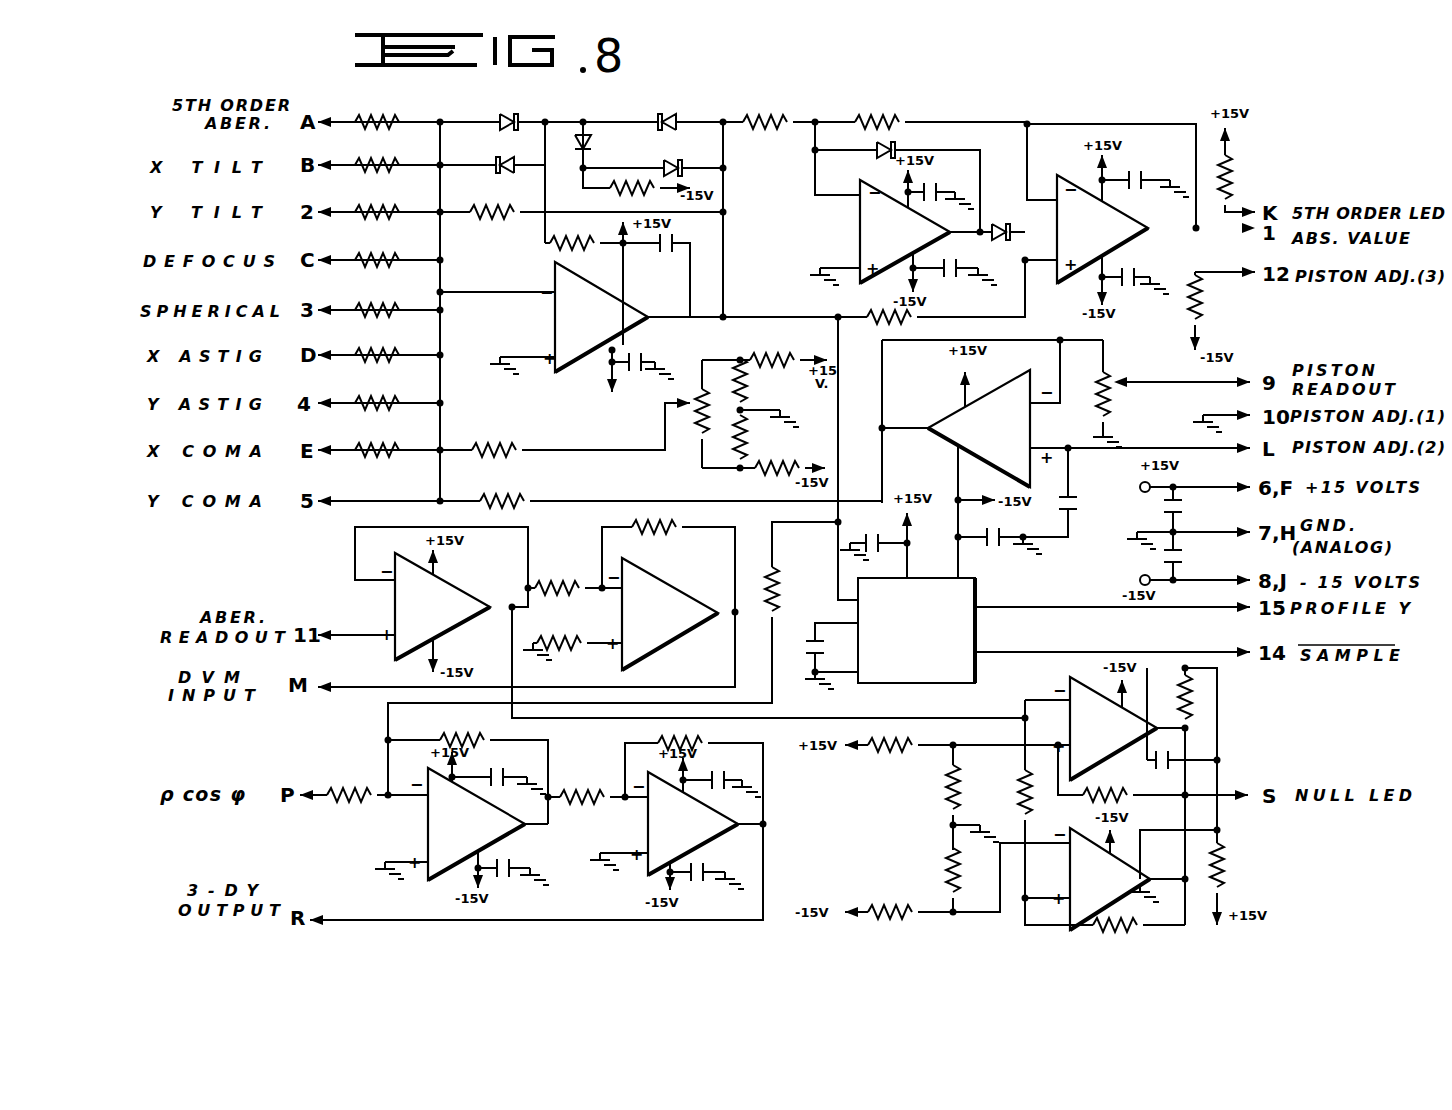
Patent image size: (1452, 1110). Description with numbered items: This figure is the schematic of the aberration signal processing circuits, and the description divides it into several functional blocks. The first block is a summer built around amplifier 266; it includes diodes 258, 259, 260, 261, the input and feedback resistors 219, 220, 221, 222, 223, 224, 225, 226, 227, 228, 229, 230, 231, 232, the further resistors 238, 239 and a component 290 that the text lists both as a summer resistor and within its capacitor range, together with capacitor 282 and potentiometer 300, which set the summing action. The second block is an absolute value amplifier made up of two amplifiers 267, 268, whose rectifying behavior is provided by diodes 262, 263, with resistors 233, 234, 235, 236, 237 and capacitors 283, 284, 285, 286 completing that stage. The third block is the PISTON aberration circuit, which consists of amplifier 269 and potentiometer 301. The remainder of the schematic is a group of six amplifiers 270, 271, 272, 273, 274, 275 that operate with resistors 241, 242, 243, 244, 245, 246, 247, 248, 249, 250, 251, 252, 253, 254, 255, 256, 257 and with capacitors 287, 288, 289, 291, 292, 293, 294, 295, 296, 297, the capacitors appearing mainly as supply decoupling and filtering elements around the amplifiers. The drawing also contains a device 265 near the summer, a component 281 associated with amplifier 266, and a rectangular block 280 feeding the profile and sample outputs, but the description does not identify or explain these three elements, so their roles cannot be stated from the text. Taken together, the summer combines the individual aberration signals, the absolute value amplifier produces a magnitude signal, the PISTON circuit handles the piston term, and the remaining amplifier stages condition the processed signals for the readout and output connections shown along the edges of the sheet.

The resistor 219 is at (815, 338).
The resistor 220 is at (373, 273).
The resistor 221 is at (360, 132).
The resistor 222 is at (373, 179).
The resistor 223 is at (373, 226).
The resistor 224 is at (381, 323).
The resistor 225 is at (381, 370).
The resistor 226 is at (381, 418).
The resistor 227 is at (381, 465).
The resistor 228 is at (491, 225).
The resistor 229 is at (498, 437).
The resistor 230 is at (502, 487).
The resistor 231 is at (545, 236).
The resistor 232 is at (610, 192).
The resistor 233 is at (800, 108).
The resistor 234 is at (872, 110).
The resistor 235 is at (900, 331).
The resistor 236 is at (1232, 175).
The resistor 237 is at (1202, 310).
The resistor 238 is at (740, 360).
The resistor 239 is at (740, 468).
The resistor 241 is at (780, 592).
The resistor 242 is at (650, 535).
The resistor 243 is at (585, 570).
The resistor 244 is at (598, 632).
The resistor 245 is at (458, 732).
The resistor 246 is at (375, 772).
The resistor 247 is at (610, 775).
The resistor 248 is at (660, 742).
The resistor 249 is at (913, 766).
The resistor 250 is at (948, 785).
The resistor 251 is at (938, 885).
The resistor 252 is at (895, 900).
The resistor 253 is at (1012, 803).
The resistor 254 is at (1192, 702).
The resistor 255 is at (1148, 785).
The resistor 256 is at (1140, 925).
The resistor 257 is at (1222, 855).
The diode 258 is at (515, 110).
The diode 259 is at (502, 158).
The diode 260 is at (675, 112).
The diode 261 is at (673, 160).
The diode 262 is at (915, 148).
The diode 263 is at (1025, 215).
The zener diode 265 is at (586, 130).
The amplifier 266 is at (555, 322).
The amplifier 267 is at (860, 232).
The amplifier 268 is at (1078, 180).
The amplifier 269 is at (945, 415).
The amplifier 270 is at (458, 595).
The amplifier 271 is at (675, 585).
The amplifier 272 is at (428, 840).
The amplifier 273 is at (648, 840).
The amplifier 274 is at (1070, 700).
The amplifier 275 is at (1070, 875).
The sample and hold circuit 280 is at (983, 632).
The capacitor 281 is at (650, 275).
The capacitor 282 is at (612, 385).
The capacitor 283 is at (938, 169).
The capacitor 284 is at (950, 258).
The capacitor 285 is at (1138, 165).
The capacitor 286 is at (1130, 265).
The capacitor 287 is at (1081, 486).
The capacitor 288 is at (1010, 525).
The capacitor 289 is at (1183, 510).
The resistor 290 is at (812, 452).
The capacitor 291 is at (895, 530).
The capacitor 292 is at (805, 645).
The capacitor 293 is at (1175, 765).
The capacitor 294 is at (718, 768).
The capacitor 295 is at (708, 862).
The capacitor 296 is at (506, 757).
The capacitor 297 is at (510, 850).
The potentiometer 300 is at (690, 410).
The potentiometer 301 is at (1090, 393).